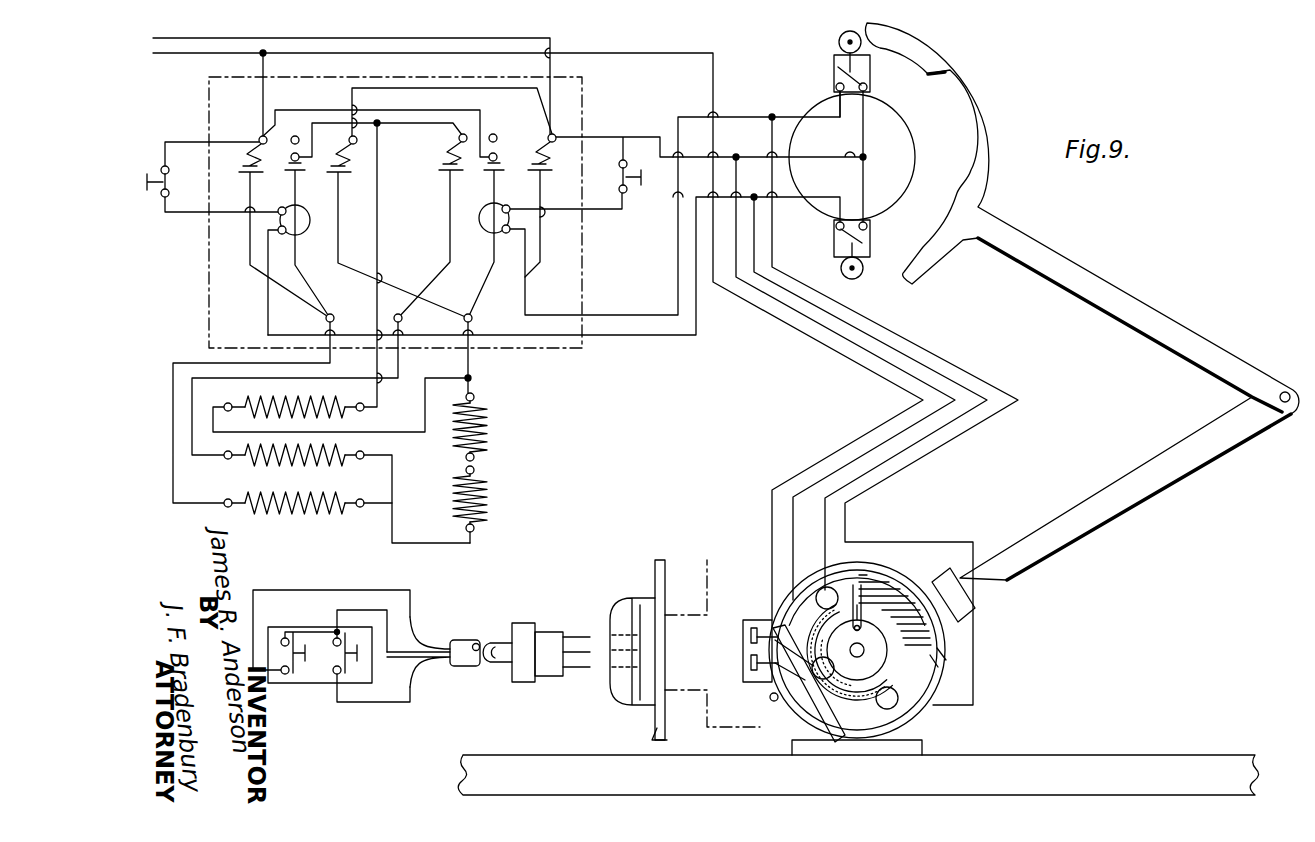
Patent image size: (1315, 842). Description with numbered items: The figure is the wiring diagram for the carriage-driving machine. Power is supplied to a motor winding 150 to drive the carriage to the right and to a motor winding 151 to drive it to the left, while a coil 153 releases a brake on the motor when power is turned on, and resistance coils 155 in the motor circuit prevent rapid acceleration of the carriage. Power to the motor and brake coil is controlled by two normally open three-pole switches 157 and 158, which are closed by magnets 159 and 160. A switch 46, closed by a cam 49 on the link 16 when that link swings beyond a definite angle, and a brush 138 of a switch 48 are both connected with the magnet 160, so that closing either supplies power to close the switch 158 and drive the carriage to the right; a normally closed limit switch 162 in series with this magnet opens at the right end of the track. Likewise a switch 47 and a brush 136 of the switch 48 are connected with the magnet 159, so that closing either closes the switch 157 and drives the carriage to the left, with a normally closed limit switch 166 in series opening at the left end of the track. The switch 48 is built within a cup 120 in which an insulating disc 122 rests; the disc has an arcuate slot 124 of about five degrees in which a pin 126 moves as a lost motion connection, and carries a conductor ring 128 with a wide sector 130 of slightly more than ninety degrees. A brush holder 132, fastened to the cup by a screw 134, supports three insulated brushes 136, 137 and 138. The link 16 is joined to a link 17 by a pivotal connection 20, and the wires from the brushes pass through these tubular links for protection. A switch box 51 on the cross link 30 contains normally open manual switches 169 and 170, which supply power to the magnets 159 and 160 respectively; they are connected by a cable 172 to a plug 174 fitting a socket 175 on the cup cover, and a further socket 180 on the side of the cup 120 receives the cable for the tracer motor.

The link 16 is at (1090, 280).
The link 17 is at (1125, 498).
The pivotal connection 20 is at (1285, 392).
The cross link 30 is at (1150, 753).
The switch 46 is at (833, 77).
The switch 47 is at (829, 247).
The switch 48 is at (941, 717).
The cam 49 is at (957, 73).
The switch box 51 is at (326, 692).
The cup 120 is at (947, 665).
The disc 122 is at (950, 647).
The arcuate slot 124 is at (871, 597).
The pin 126 is at (857, 583).
The conductor ring 128 is at (883, 670).
The wide sector 130 is at (888, 602).
The brush holder 132 is at (795, 734).
The screw 134 is at (770, 700).
The brush 136 is at (827, 587).
The brush 137 is at (811, 681).
The brush 138 is at (902, 704).
The motor winding 150 is at (258, 468).
The motor winding 151 is at (288, 517).
The coil 153 is at (343, 418).
The resistance coils 155 is at (492, 483).
The three-pole switch 157 is at (250, 160).
The three-pole switch 158 is at (553, 165).
The magnet 159 is at (312, 227).
The magnet 160 is at (478, 222).
The limit switch 162 is at (628, 193).
The limit switch 166 is at (157, 163).
The switch 169 is at (290, 685).
The switch 170 is at (345, 684).
The cable 172 is at (463, 668).
The plug 174 is at (522, 623).
The socket 175 is at (627, 617).
The socket 180 is at (740, 648).